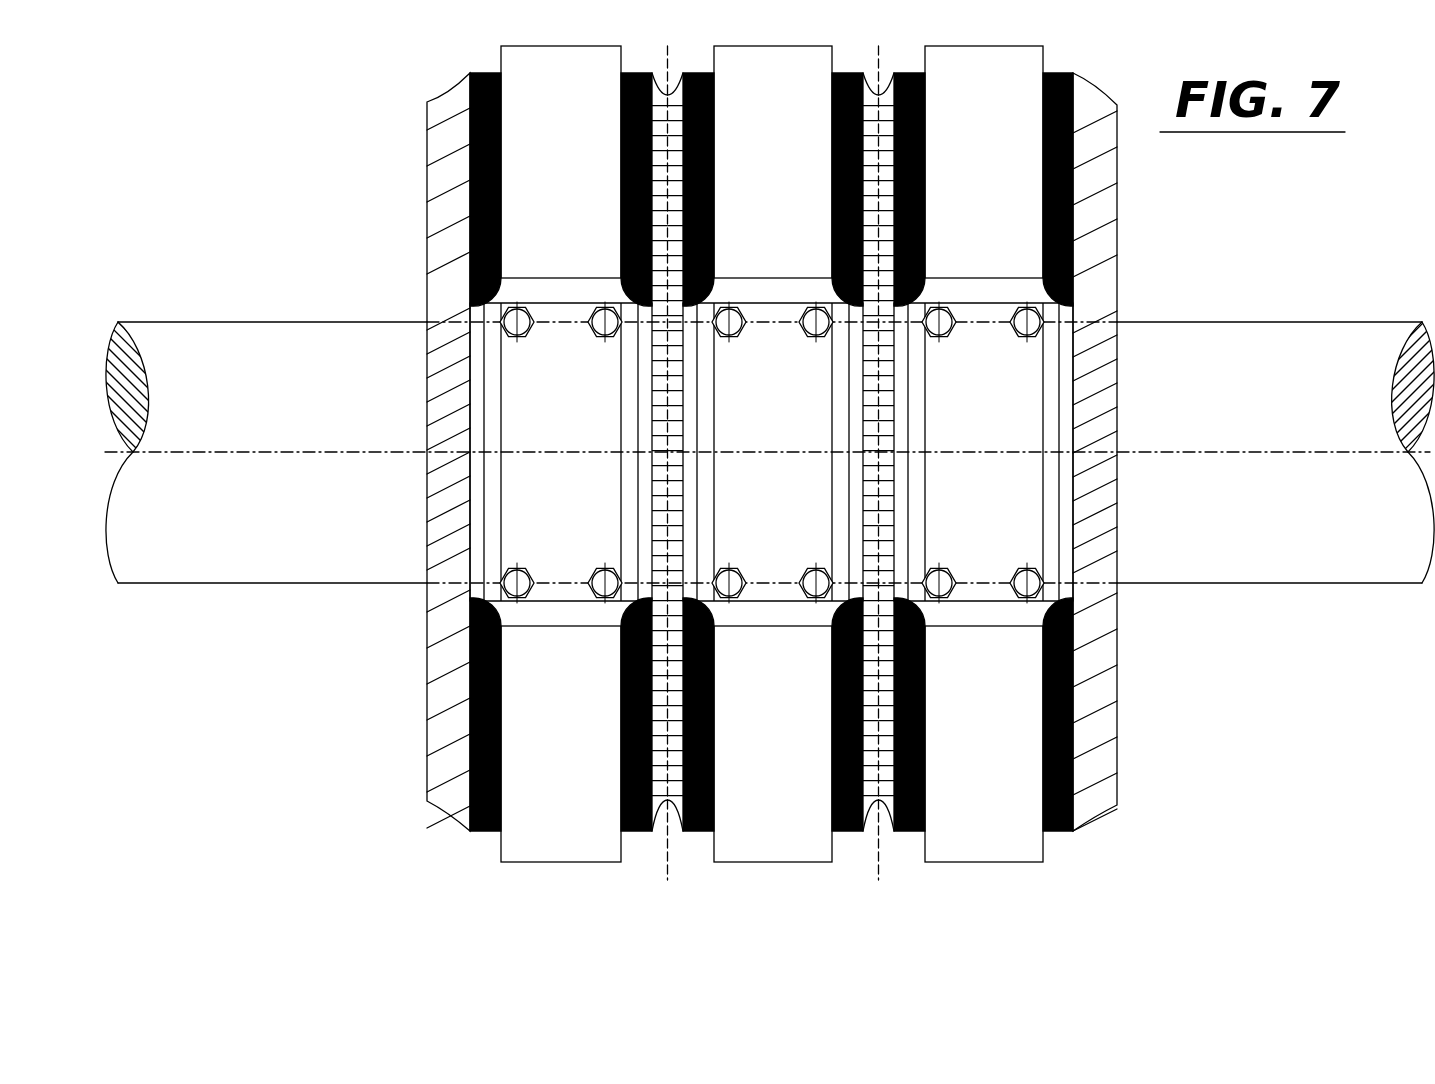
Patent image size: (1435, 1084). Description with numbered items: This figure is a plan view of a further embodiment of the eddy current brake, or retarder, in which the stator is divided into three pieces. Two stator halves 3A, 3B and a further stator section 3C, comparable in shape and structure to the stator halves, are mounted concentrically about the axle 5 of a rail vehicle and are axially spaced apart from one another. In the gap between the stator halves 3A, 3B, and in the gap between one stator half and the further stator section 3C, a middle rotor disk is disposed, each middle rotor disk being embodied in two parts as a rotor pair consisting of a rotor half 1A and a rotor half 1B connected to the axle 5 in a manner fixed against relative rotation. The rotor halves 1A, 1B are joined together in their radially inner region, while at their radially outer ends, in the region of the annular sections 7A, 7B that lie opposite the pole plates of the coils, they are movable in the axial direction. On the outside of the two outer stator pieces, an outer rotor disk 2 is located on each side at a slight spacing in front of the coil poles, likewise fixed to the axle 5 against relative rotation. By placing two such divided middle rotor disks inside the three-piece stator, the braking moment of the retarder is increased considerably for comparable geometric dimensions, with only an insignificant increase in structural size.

The rotor half 1A is at (850, 858).
The rotor half 1B is at (906, 858).
The outer rotor disk 2 is at (1120, 938).
The stator half 3A is at (566, 815).
The stator half 3B is at (773, 838).
The stator section 3C is at (978, 828).
The axle 5 is at (1215, 573).
The annular section 7A is at (832, 180).
The annular section 7B is at (925, 177).